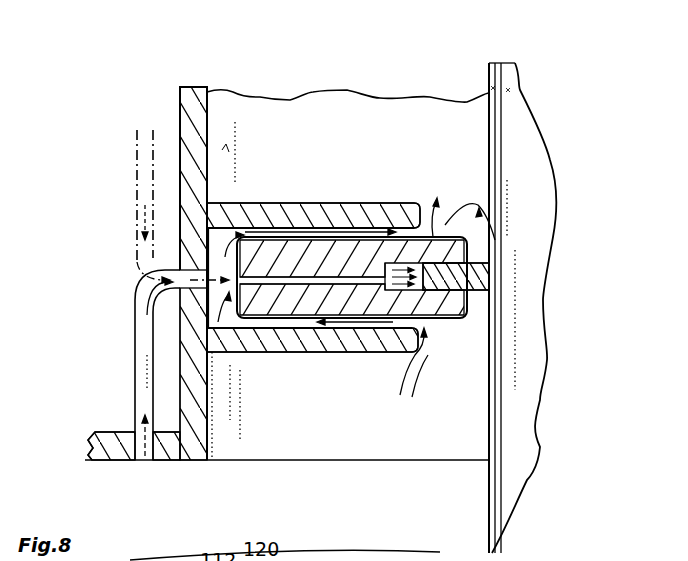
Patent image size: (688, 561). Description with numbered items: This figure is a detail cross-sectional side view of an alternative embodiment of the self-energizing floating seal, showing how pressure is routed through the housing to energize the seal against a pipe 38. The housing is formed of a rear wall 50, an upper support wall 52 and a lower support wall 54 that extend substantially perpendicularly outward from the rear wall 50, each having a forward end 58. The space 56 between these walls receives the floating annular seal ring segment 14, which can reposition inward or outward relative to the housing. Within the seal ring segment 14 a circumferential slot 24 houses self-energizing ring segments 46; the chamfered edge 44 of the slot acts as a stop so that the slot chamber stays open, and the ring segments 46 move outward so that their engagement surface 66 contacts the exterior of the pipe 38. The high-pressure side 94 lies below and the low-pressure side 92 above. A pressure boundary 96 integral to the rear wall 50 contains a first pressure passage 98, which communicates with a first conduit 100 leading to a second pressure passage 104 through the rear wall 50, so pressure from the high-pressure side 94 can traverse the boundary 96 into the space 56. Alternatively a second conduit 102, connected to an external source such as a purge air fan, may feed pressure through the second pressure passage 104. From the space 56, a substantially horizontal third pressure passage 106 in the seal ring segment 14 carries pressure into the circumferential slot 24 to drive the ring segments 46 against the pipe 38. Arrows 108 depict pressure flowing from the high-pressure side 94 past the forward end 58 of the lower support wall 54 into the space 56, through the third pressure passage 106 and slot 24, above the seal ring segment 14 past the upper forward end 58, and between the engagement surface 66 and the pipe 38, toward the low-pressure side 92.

The floating annular seal ring segment 14 is at (363, 230).
The circumferential slot 24 is at (493, 232).
The pipe 38 is at (537, 280).
The chamfered edge 44 is at (387, 237).
The self-energizing ring segments 46 is at (470, 288).
The rear wall 50 is at (190, 222).
The upper support wall 52 is at (303, 217).
The lower support wall 54 is at (297, 370).
The space 56 is at (223, 222).
The forward end 58 is at (415, 213).
The engagement surface 66 is at (472, 278).
The low-pressure side 92 is at (347, 137).
The high-pressure side 94 is at (352, 433).
The pressure boundary 96 is at (100, 438).
The first pressure passage 98 is at (160, 463).
The first conduit 100 is at (135, 343).
The second conduit 102 is at (135, 193).
The second pressure passage 104 is at (190, 300).
The third pressure passage 106 is at (265, 237).
The pressure arrows 108 is at (443, 213).